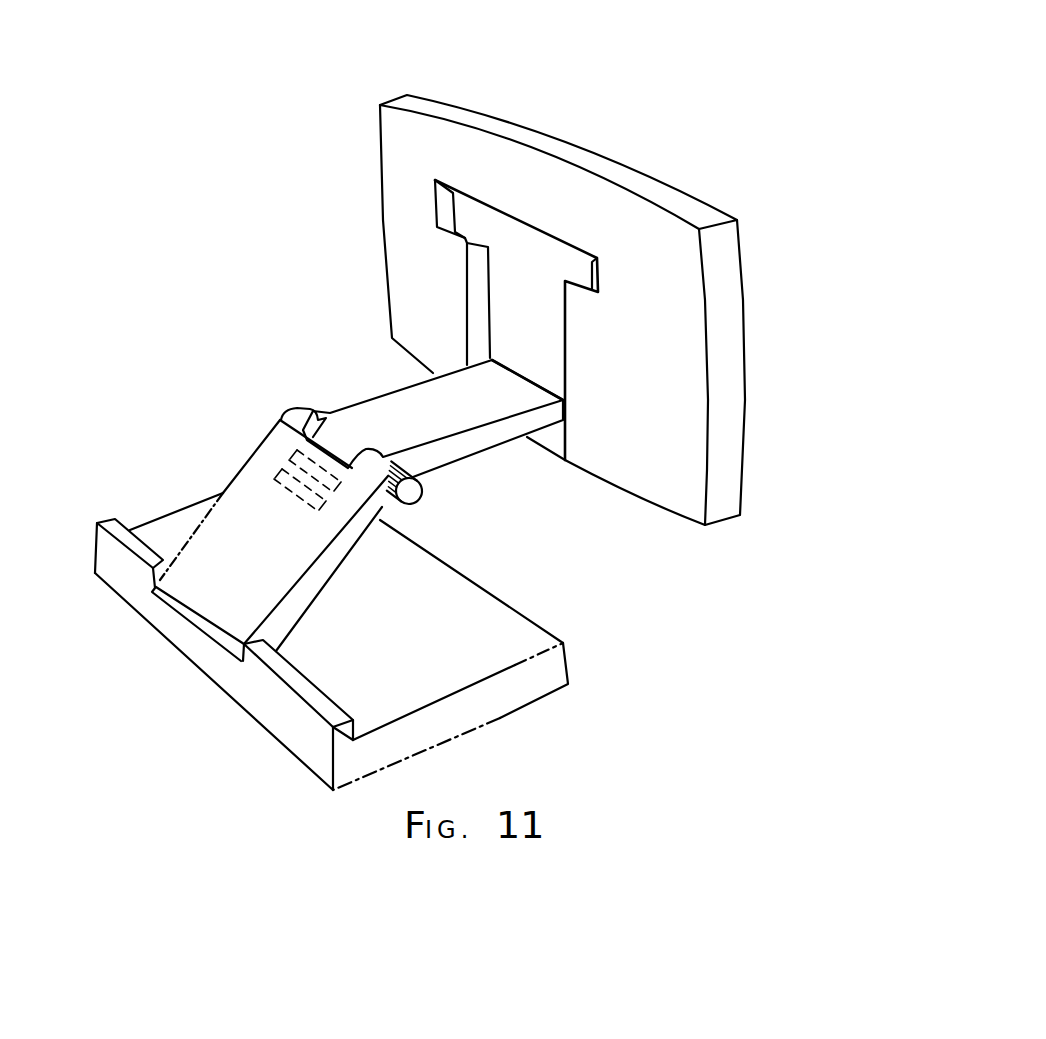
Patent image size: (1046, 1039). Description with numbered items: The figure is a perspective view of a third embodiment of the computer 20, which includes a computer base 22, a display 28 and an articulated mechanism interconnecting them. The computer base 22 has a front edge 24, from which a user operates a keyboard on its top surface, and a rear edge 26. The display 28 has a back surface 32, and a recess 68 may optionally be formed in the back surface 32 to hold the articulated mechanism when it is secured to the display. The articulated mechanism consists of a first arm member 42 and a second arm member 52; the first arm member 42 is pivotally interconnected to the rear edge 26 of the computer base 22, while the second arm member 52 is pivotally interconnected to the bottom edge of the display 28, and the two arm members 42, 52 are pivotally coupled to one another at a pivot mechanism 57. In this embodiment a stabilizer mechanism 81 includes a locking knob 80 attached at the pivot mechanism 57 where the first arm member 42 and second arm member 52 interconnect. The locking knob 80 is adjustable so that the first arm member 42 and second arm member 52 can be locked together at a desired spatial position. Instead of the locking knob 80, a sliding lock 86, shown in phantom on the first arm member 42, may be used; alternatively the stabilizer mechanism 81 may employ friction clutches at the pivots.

The computer 20 is at (487, 56).
The computer base 22 is at (503, 658).
The front edge 24 is at (566, 630).
The rear edge 26 is at (309, 758).
The display 28 is at (727, 380).
The back surface 32 is at (402, 162).
The first arm member 42 is at (215, 578).
The second arm member 52 is at (373, 408).
The pivot mechanism 57 is at (300, 433).
The recess 68 is at (518, 310).
The locking knob 80 is at (422, 500).
The stabilizer mechanism 81 is at (442, 482).
The sliding lock 86 is at (301, 509).